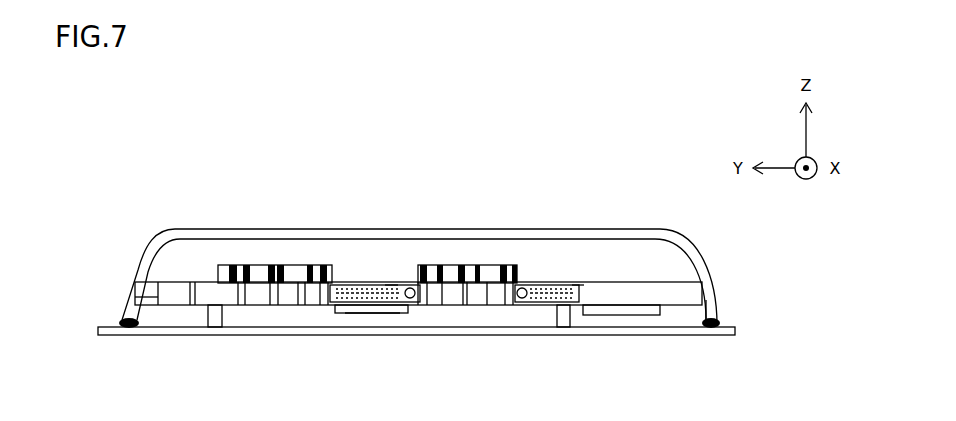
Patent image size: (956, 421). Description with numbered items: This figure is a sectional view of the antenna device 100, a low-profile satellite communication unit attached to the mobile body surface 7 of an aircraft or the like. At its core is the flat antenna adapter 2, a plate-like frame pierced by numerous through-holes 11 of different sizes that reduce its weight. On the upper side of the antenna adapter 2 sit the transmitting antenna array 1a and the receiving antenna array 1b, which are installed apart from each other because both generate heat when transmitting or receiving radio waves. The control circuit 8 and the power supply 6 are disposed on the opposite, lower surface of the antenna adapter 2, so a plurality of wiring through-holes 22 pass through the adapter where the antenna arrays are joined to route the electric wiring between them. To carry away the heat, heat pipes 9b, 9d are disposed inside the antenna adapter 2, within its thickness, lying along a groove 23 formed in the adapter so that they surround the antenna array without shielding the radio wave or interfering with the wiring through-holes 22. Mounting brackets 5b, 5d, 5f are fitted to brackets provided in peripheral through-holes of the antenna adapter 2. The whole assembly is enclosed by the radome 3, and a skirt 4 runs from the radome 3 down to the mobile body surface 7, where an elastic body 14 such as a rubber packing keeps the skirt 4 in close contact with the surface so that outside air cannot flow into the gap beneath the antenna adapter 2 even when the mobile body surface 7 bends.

The antenna device 100 is at (222, 105).
The transmitting antenna array 1a is at (256, 265).
The receiving antenna array 1b is at (448, 266).
The antenna adapter 2 is at (618, 287).
The radome 3 is at (172, 232).
The skirt 4 is at (710, 300).
The mounting bracket 5b is at (213, 328).
The mounting bracket 5d is at (352, 313).
The mounting bracket 5f is at (563, 327).
The power supply 6 is at (612, 315).
The mobile body surface 7 is at (103, 327).
The control circuit 8 is at (382, 313).
The heat pipe 9b is at (355, 285).
The heat pipe 9d is at (540, 285).
The through-hole 11 is at (166, 297).
The elastic body 14 is at (712, 327).
The wiring through-hole 22 is at (272, 305).
The groove 23 is at (392, 285).